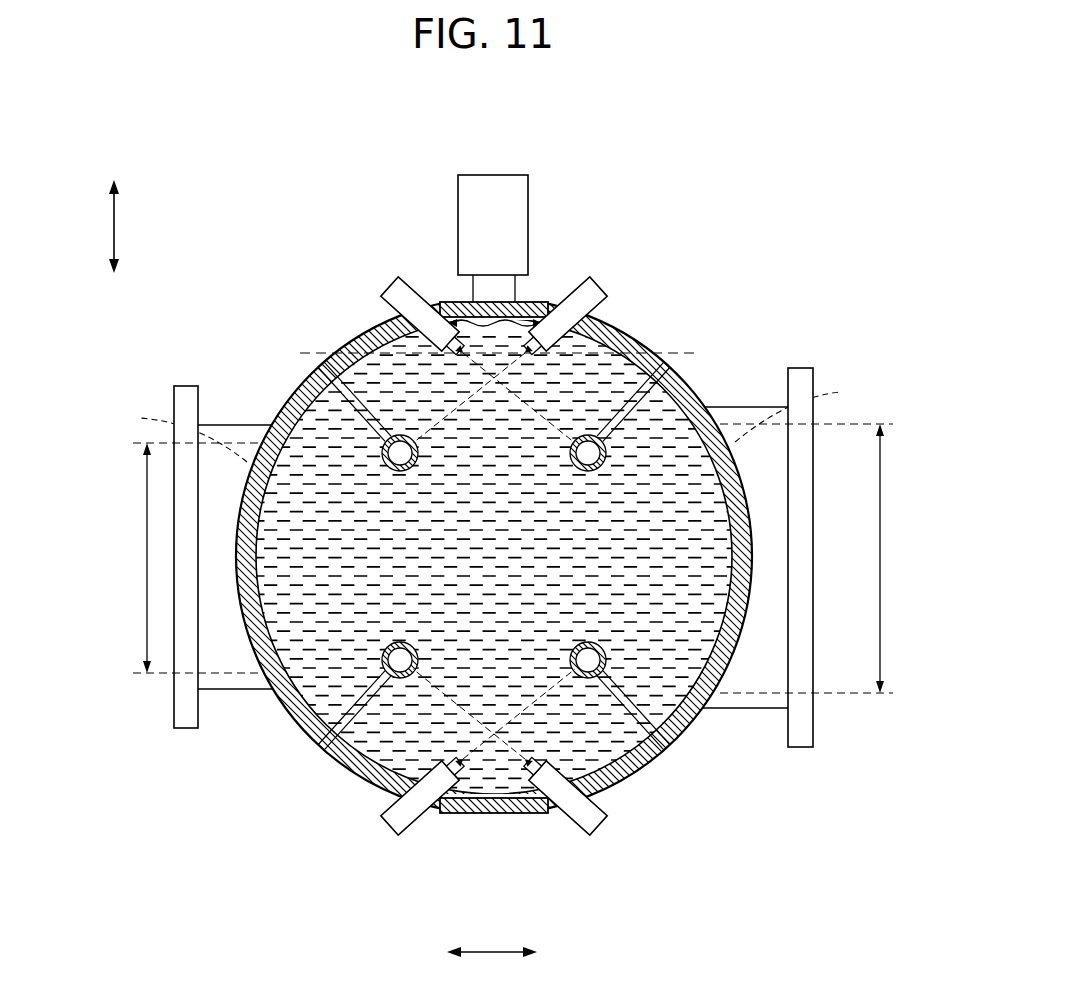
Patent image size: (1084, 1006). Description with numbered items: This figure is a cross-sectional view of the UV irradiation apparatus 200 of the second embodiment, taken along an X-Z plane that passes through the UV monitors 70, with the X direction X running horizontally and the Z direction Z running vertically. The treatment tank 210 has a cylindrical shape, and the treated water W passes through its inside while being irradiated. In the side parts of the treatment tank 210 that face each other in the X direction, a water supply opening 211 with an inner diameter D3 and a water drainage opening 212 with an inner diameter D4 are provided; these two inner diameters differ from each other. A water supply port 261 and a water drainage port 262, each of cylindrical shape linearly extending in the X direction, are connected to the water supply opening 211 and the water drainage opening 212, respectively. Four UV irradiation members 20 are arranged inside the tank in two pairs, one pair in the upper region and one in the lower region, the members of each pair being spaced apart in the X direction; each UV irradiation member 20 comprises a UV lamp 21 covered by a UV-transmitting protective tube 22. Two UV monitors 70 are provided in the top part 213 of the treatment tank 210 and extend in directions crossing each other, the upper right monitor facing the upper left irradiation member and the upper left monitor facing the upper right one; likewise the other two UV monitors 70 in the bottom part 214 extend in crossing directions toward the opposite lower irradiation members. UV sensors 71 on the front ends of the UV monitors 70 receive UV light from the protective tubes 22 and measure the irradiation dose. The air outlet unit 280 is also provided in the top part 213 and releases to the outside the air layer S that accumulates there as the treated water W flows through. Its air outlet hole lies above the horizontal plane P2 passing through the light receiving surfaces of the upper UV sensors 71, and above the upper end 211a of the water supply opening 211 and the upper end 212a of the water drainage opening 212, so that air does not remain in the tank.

The UV irradiation apparatus 200 is at (222, 160).
The treatment tank 210 is at (648, 352).
The water supply opening 211 is at (178, 540).
The upper end of the water supply opening 211a is at (178, 540).
The water drainage opening 212 is at (798, 539).
The upper end of the water drainage opening 212a is at (798, 539).
The top part 213 is at (450, 305).
The bottom part 214 is at (490, 815).
The water supply port 261 is at (208, 420).
The water drainage port 262 is at (818, 368).
The air outlet unit 280 is at (490, 175).
The UV monitor 70 is at (398, 287).
The UV sensor 71 is at (412, 327).
The UV irradiation member 20 is at (490, 576).
The UV lamp 21 is at (308, 392).
The protective tube 22 is at (312, 370).
The air layer S is at (530, 322).
The horizontal plane P2 is at (305, 353).
The treated water W is at (292, 707).
The inner diameter of the water supply opening D3 is at (182, 558).
The inner diameter of the water drainage opening D4 is at (818, 558).
The Z direction Z is at (104, 226).
The X direction X is at (492, 968).